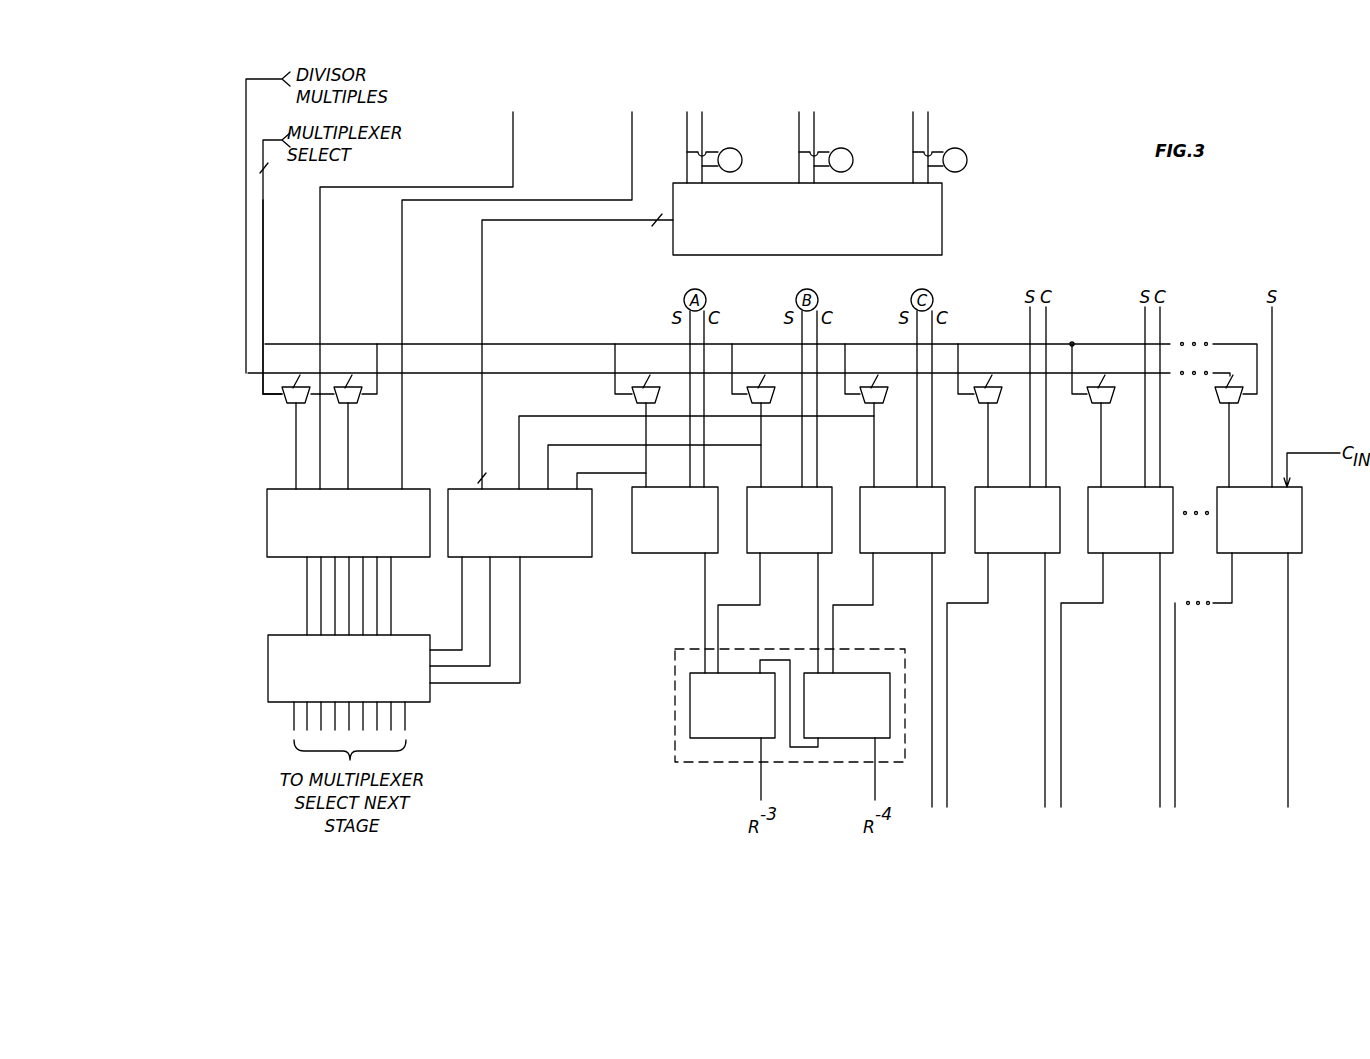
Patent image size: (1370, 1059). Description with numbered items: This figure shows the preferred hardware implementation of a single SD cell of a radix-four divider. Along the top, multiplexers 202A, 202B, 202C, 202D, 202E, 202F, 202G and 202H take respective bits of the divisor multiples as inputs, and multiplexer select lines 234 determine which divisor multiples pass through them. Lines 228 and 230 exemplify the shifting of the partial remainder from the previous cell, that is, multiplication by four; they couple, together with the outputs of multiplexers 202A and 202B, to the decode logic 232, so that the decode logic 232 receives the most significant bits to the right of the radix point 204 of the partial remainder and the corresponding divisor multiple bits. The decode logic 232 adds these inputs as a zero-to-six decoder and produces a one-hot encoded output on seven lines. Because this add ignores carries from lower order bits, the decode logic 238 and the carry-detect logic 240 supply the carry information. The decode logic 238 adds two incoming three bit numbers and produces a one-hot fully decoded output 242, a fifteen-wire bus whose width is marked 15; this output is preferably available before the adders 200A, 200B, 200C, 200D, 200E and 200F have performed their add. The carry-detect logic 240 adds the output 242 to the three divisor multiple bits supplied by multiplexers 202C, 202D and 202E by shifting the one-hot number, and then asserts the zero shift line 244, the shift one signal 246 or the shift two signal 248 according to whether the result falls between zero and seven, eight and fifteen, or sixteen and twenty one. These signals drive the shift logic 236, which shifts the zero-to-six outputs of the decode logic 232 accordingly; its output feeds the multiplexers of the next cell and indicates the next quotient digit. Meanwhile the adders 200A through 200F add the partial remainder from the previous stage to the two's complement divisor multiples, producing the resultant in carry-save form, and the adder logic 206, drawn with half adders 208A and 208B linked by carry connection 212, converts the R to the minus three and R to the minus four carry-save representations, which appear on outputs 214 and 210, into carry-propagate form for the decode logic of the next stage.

The 15-bit bus 15 is at (652, 237).
The adder 200A is at (675, 520).
The adder 200B is at (789, 520).
The adder 200C is at (902, 520).
The adder 200D is at (1017, 520).
The adder 200E is at (1130, 520).
The adder 200F is at (1259, 520).
The multiplexer 202A is at (287, 403).
The multiplexer 202B is at (357, 403).
The multiplexer 202C is at (637, 401).
The multiplexer 202D is at (772, 386).
The multiplexer 202E is at (880, 386).
The multiplexer 202F is at (996, 386).
The multiplexer 202G is at (1106, 386).
The multiplexer 202H is at (1237, 386).
The radix point 204 is at (252, 560).
The adder logic 206 is at (747, 726).
The half adder 208A is at (732, 706).
The half adder 208B is at (847, 706).
The remainder output R-4 210 is at (875, 782).
The carry connection 212 is at (795, 747).
The remainder output R-3 214 is at (760, 778).
The line 228 is at (321, 243).
The line 230 is at (403, 257).
The decode logic 232 is at (267, 525).
The multiplexer select lines 234 is at (264, 213).
The shift logic 236 is at (430, 700).
The decode logic 238 is at (942, 227).
The carry-detect logic 240 is at (560, 557).
The fully decoded output 242 is at (483, 280).
The zero shift line 244 is at (462, 612).
The shift one signal 246 is at (490, 617).
The shift two signal 248 is at (521, 668).